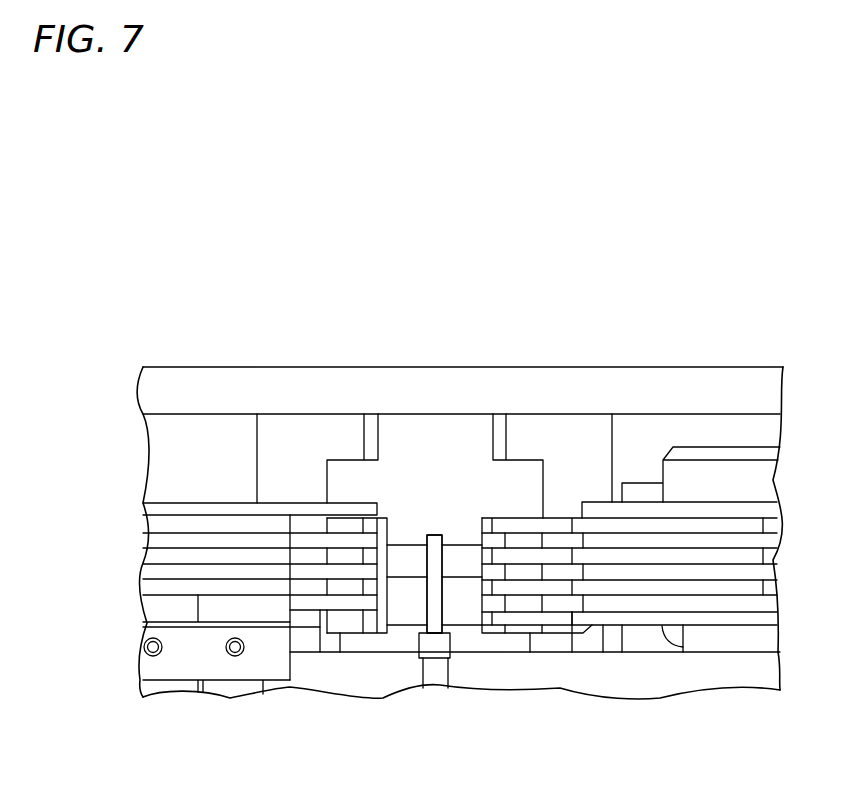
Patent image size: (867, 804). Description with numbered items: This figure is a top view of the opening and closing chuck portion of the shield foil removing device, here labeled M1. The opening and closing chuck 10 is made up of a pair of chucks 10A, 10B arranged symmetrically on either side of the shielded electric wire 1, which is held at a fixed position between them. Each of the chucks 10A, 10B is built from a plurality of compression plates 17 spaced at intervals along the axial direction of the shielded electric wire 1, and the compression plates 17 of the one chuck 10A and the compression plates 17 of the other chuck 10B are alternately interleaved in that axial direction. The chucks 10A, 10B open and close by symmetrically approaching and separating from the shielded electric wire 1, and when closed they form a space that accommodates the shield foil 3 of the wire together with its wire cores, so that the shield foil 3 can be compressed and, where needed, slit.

The module assembly M1 is at (514, 350).
The compression plate 17 is at (278, 510).
The opening and closing chuck 10 is at (460, 494).
The chuck 10A is at (305, 498).
The chuck 10B is at (555, 516).
The shielded electric wire 1 is at (418, 613).
The shield foil 3 is at (441, 598).